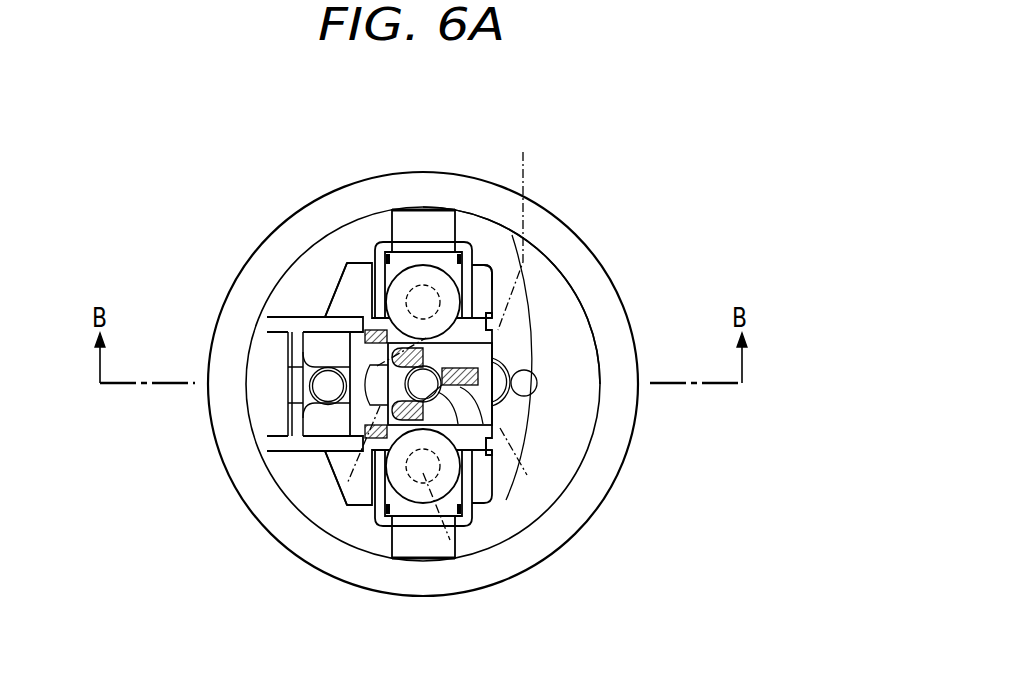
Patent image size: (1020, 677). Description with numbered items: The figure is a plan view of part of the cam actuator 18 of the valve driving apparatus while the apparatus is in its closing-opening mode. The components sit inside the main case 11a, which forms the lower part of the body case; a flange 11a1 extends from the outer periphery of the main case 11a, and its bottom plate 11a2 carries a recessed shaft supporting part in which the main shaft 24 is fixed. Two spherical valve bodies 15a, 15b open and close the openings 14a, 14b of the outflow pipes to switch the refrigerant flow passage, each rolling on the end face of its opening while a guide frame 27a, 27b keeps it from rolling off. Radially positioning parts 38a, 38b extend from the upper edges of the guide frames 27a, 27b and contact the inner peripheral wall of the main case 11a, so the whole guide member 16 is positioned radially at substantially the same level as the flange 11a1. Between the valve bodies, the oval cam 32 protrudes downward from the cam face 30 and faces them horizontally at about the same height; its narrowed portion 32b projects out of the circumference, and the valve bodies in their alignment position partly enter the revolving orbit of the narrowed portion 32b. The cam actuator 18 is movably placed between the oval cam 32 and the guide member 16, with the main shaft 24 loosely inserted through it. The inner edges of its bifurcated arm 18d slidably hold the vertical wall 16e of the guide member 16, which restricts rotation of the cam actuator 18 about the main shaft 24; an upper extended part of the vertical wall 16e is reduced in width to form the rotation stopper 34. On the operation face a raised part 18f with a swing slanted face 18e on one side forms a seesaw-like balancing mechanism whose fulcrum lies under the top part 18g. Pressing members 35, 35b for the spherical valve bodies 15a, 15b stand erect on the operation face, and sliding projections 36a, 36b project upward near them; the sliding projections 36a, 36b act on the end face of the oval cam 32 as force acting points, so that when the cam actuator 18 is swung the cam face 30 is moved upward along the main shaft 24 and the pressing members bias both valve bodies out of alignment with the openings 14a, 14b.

The main case 11a is at (492, 548).
The flange 11a1 is at (548, 560).
The bottom plate 11a2 is at (606, 322).
The opening 14a is at (420, 292).
The opening 14b is at (430, 480).
The spherical valve body 15a is at (438, 270).
The spherical valve body 15b is at (393, 530).
The guide member 16 is at (338, 282).
The vertical wall 16e is at (287, 365).
The cam actuator 18 is at (493, 452).
The bifurcated arm 18d is at (297, 317).
The swing slanted face 18e is at (493, 426).
The raised part 18f is at (560, 385).
The top part 18g is at (583, 310).
The main shaft 24 is at (328, 316).
The guide frame 27a is at (477, 288).
The guide frame 27b is at (490, 505).
The cam face 30 is at (499, 300).
The oval cam 32 is at (556, 322).
The narrowed portion 32b is at (312, 390).
The rotation stopper 34 is at (270, 400).
The pressing member 35 is at (310, 318).
The pressing member 35b is at (295, 450).
The sliding projection 36a is at (537, 322).
The sliding projection 36b is at (493, 475).
The radially positioning part 38a is at (373, 243).
The radially positioning part 38b is at (376, 526).